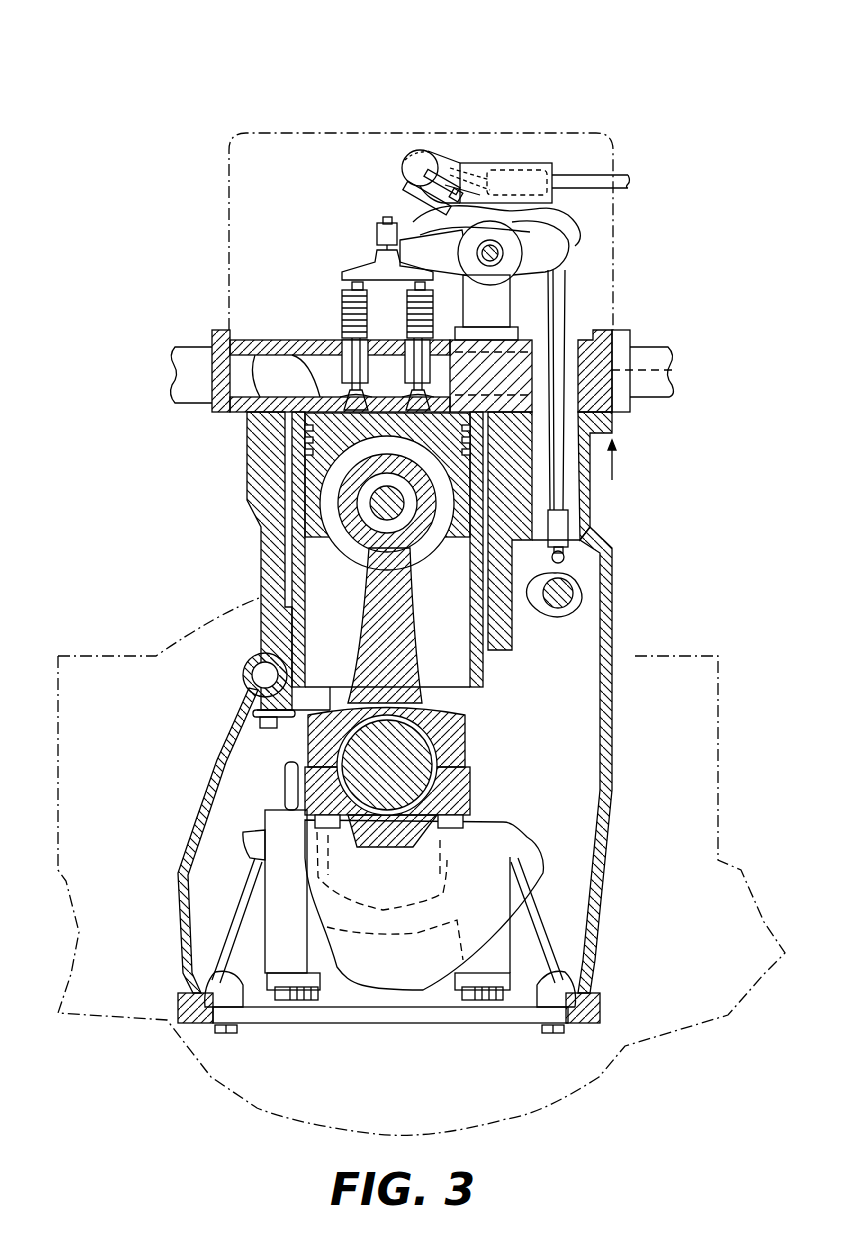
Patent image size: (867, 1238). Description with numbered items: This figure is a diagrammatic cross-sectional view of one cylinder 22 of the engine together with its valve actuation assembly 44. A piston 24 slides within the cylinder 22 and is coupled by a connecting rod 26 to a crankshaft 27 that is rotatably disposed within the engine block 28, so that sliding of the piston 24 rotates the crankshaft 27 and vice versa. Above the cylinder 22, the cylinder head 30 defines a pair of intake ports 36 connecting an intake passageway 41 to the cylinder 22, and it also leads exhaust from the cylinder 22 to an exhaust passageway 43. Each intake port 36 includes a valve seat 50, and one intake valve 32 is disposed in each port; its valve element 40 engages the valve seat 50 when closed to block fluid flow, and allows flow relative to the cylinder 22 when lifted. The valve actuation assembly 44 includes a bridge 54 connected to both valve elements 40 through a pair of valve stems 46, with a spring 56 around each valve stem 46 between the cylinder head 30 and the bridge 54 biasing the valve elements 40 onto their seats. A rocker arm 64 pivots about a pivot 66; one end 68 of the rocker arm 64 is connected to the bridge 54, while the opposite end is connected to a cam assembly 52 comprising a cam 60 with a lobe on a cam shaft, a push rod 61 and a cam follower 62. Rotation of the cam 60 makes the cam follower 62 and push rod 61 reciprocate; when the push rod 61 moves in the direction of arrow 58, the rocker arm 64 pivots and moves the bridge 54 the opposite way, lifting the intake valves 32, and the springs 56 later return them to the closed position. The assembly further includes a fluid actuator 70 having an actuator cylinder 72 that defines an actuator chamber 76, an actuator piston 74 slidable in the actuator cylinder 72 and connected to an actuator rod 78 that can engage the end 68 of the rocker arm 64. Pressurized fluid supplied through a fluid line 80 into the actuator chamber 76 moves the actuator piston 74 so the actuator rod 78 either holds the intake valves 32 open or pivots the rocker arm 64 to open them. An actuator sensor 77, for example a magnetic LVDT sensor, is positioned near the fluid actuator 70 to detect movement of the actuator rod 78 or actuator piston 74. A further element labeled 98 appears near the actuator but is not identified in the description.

The cylinder 22 is at (305, 577).
The piston 24 is at (283, 530).
The connecting rod 26 is at (403, 673).
The crankshaft 27 is at (503, 832).
The engine block 28 is at (265, 618).
The cylinder head 30 is at (604, 402).
The intake valve 32 is at (350, 350).
The intake port 36 is at (350, 403).
The valve element 40 is at (417, 408).
The intake passageway 41 is at (238, 368).
The exhaust passageway 43 is at (674, 358).
The valve actuation assembly 44 is at (645, 128).
The valve stem 46 is at (342, 315).
The valve seat 50 is at (305, 450).
The cam assembly 52 is at (688, 497).
The bridge 54 is at (367, 270).
The spring 56 is at (350, 300).
The arrow 58 is at (613, 463).
The cam 60 is at (550, 622).
The push rod 61 is at (558, 493).
The cam follower 62 is at (572, 563).
The rocker arm 64 is at (545, 238).
The pivot 66 is at (540, 213).
The end of rocker arm 68 is at (385, 217).
The fluid actuator 70 is at (494, 140).
The actuator cylinder 72 is at (397, 150).
The actuator piston 74 is at (420, 155).
The actuator chamber 76 is at (468, 160).
The actuator sensor 77 is at (487, 173).
The actuator rod 78 is at (420, 203).
The fluid line 80 is at (553, 180).
The solenoid 98 is at (532, 173).